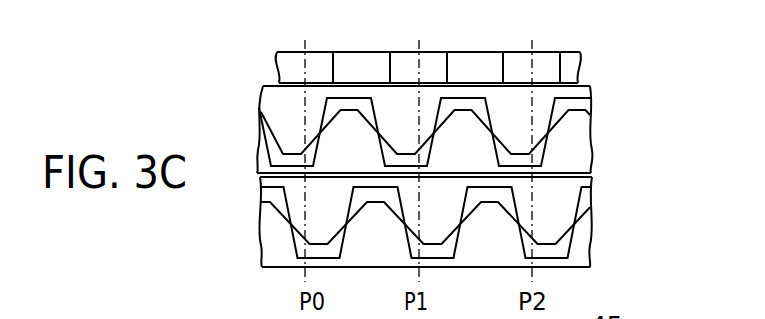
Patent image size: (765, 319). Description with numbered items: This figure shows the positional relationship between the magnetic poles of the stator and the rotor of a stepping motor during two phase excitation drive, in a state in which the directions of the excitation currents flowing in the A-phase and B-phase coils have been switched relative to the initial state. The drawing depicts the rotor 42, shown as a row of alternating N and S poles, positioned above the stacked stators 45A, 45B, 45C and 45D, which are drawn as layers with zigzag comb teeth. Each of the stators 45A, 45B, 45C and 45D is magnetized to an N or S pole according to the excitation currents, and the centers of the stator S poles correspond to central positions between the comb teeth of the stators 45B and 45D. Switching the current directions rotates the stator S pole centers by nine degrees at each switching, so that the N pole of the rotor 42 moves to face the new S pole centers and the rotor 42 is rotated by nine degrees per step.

The rotor 42 is at (542, 50).
The stator 45A is at (517, 130).
The stator 45B is at (575, 142).
The stator 45C is at (550, 217).
The stator 45D is at (580, 257).